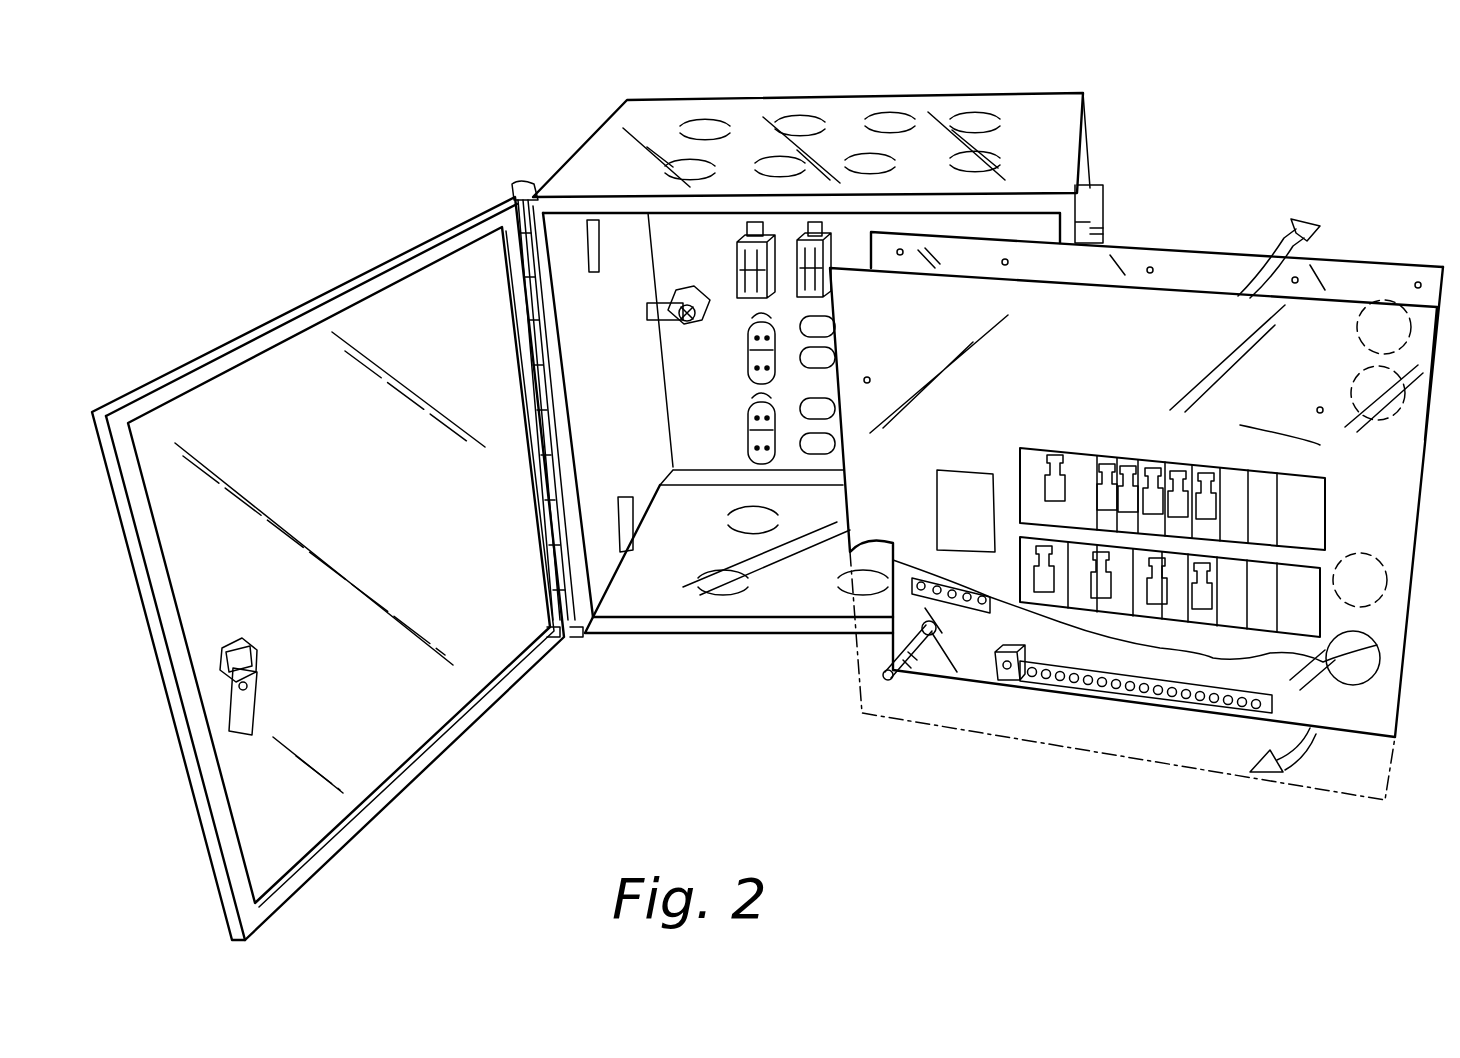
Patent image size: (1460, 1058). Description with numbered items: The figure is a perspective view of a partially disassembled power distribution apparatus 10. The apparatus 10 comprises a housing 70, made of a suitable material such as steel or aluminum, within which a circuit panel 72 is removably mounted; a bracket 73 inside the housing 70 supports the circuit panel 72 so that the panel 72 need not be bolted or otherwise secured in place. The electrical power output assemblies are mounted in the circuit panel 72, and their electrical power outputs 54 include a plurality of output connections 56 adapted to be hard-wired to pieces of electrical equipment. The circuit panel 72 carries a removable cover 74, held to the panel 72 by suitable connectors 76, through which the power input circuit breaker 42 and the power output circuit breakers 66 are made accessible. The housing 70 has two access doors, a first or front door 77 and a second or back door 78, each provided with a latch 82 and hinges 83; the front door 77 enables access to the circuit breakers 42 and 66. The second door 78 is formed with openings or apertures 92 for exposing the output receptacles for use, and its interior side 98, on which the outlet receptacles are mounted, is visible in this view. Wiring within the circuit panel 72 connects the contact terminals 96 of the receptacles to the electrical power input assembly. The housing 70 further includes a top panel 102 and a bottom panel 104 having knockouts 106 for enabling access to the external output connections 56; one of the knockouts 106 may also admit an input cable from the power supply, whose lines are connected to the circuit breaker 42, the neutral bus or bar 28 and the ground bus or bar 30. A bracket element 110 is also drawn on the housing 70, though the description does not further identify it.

The apparatus 10 is at (395, 213).
The neutral bus or bar 28 is at (977, 605).
The ground bus or bar 30 is at (1120, 692).
The power input circuit breaker 42 is at (1080, 470).
The electrical power outputs 54 is at (1020, 458).
The output connections 56 is at (1302, 215).
The power output circuit breakers 66 is at (1215, 470).
The housing 70 is at (600, 126).
The circuit panel 72 is at (1362, 261).
The bracket 73 is at (588, 268).
The removable cover 74 is at (1075, 308).
The connectors 76 is at (905, 655).
The first or front door 77 is at (272, 316).
The second or back door 78 is at (680, 462).
The latch 82 is at (250, 694).
The hinges 83 is at (518, 186).
The openings or apertures 92 is at (752, 440).
The contact terminals 96 is at (737, 270).
The interior side 98 is at (675, 418).
The top panel 102 is at (1055, 128).
The bottom panel 104 is at (665, 600).
The knockouts 106 is at (688, 142).
The mounting bracket 110 is at (1105, 192).